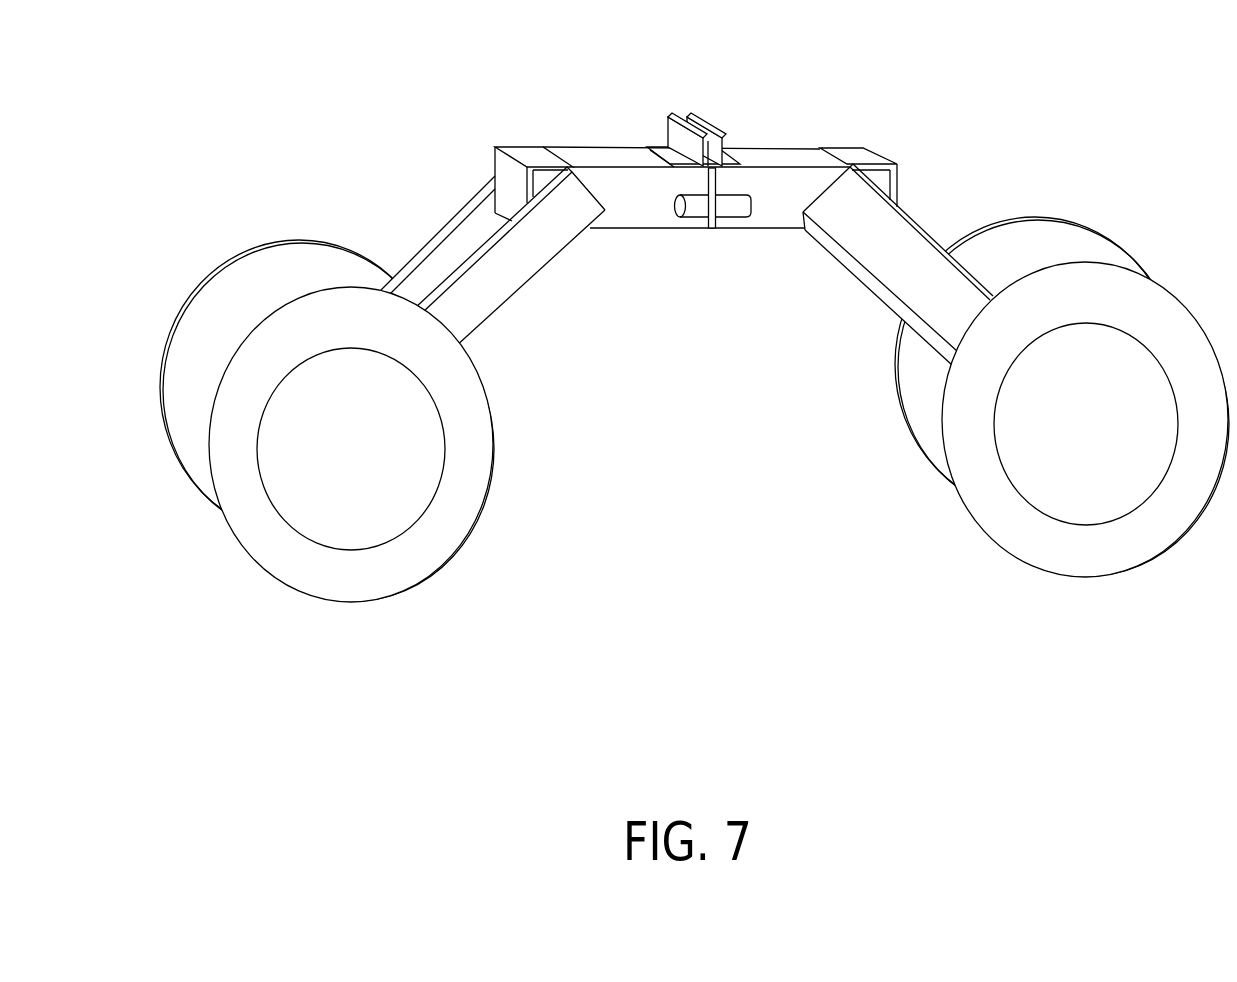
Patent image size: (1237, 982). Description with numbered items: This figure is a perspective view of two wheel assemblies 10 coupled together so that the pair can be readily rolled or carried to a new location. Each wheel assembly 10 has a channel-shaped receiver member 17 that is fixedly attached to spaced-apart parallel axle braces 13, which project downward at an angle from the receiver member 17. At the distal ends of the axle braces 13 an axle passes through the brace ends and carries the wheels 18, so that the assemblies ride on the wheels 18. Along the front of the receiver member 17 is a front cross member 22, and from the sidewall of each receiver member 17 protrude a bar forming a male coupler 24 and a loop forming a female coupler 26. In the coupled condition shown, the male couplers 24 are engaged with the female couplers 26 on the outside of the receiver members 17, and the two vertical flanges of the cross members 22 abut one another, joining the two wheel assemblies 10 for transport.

The wheel assembly 10 is at (694, 330).
The axle brace 13 is at (447, 233).
The receiver member 17 is at (873, 132).
The wheel 18 is at (382, 373).
The front cross member 22 is at (670, 133).
The male coupler 24 is at (737, 197).
The female coupler 26 is at (697, 213).